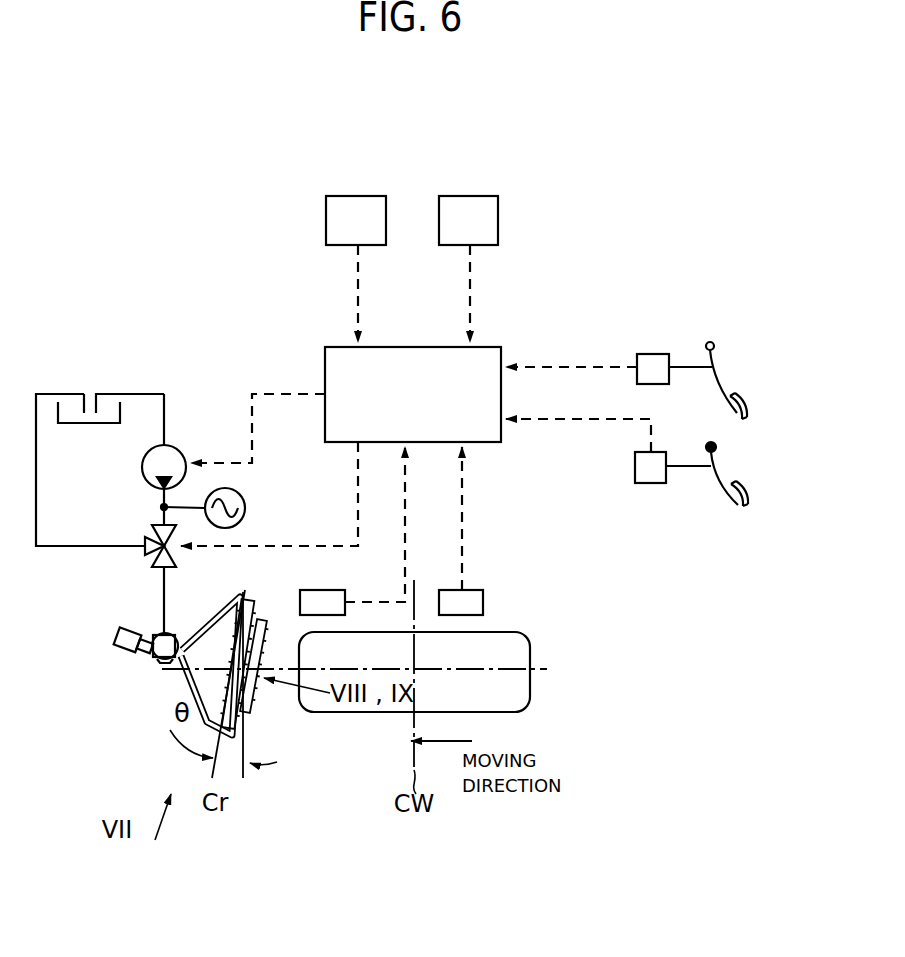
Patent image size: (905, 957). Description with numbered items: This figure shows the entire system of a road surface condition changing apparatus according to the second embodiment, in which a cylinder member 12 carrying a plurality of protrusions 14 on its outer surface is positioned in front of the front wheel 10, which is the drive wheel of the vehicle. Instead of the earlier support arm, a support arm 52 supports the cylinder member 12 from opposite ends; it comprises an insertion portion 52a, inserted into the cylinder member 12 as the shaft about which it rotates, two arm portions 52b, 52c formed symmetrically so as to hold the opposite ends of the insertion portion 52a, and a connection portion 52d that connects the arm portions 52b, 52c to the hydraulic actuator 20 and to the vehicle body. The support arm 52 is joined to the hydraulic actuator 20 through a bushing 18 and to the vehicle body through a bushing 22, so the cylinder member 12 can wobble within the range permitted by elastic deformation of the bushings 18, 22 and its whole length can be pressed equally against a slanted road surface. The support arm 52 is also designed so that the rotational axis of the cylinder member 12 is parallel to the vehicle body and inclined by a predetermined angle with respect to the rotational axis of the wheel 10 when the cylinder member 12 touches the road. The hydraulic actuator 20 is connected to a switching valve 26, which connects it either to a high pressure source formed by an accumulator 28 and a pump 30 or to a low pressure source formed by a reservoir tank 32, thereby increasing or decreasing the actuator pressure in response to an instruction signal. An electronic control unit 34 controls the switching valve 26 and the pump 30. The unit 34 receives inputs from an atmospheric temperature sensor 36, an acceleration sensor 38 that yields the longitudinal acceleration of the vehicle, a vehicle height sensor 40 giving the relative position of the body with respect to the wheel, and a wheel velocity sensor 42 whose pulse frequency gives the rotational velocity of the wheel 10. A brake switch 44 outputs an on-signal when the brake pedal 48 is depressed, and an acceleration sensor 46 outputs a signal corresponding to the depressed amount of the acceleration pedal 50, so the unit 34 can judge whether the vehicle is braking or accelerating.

The front wheel 10 is at (531, 700).
The cylinder member 12 is at (256, 684).
The protrusions 14 is at (257, 646).
The bushing 18 is at (158, 662).
The hydraulic actuator 20 is at (181, 626).
The bushing 22 is at (117, 645).
The switching valve 26 is at (152, 541).
The accumulator 28 is at (246, 506).
The pump 30 is at (178, 450).
The reservoir tank 32 is at (80, 424).
The electronic control unit 34 is at (331, 347).
The atmospheric temperature sensor 36 is at (358, 196).
The acceleration sensor 38 is at (475, 196).
The vehicle height sensor 40 is at (331, 590).
The wheel velocity sensor 42 is at (485, 602).
The brake switch 44 is at (653, 354).
The acceleration sensor 46 is at (650, 483).
The brake pedal 48 is at (716, 379).
The acceleration pedal 50 is at (718, 480).
The support arm 52 is at (255, 592).
The insertion portion 52a is at (240, 727).
The arm portion 52b is at (198, 740).
The arm portion 52c is at (212, 620).
The connection portion 52d is at (147, 653).